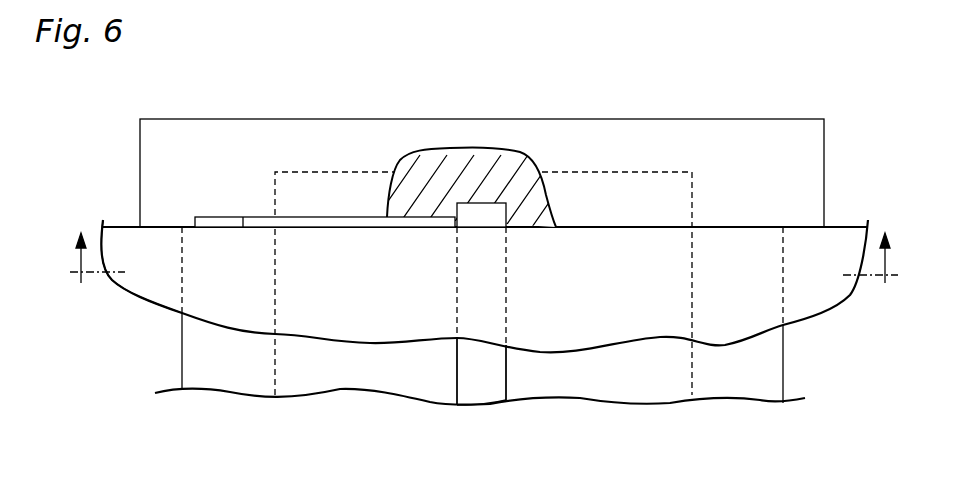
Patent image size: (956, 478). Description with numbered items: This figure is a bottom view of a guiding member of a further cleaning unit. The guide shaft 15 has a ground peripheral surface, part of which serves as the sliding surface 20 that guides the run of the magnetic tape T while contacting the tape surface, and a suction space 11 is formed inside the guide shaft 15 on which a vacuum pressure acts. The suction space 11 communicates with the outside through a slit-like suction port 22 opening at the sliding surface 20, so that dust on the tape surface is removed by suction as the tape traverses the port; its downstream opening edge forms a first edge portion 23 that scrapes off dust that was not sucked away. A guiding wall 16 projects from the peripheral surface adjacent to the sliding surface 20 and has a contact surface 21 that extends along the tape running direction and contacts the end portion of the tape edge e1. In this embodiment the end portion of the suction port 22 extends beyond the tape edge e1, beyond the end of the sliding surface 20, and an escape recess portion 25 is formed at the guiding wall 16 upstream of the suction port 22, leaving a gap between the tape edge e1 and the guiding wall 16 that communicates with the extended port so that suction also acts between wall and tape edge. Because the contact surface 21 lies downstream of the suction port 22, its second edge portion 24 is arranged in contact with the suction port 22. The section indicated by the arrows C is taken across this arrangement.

The suction space 11 is at (275, 373).
The guide shaft 15 is at (178, 355).
The guiding wall 16 is at (187, 119).
The sliding surface 20 is at (522, 380).
The contact surface 21 is at (594, 229).
The suction port 22 is at (478, 374).
The first edge portion 23 is at (506, 368).
The second edge portion 24 is at (495, 228).
The escape recess portion 25 is at (346, 228).
The tape edge e1 is at (121, 225).
The magnetic tape T is at (153, 280).
The section line C is at (484, 272).